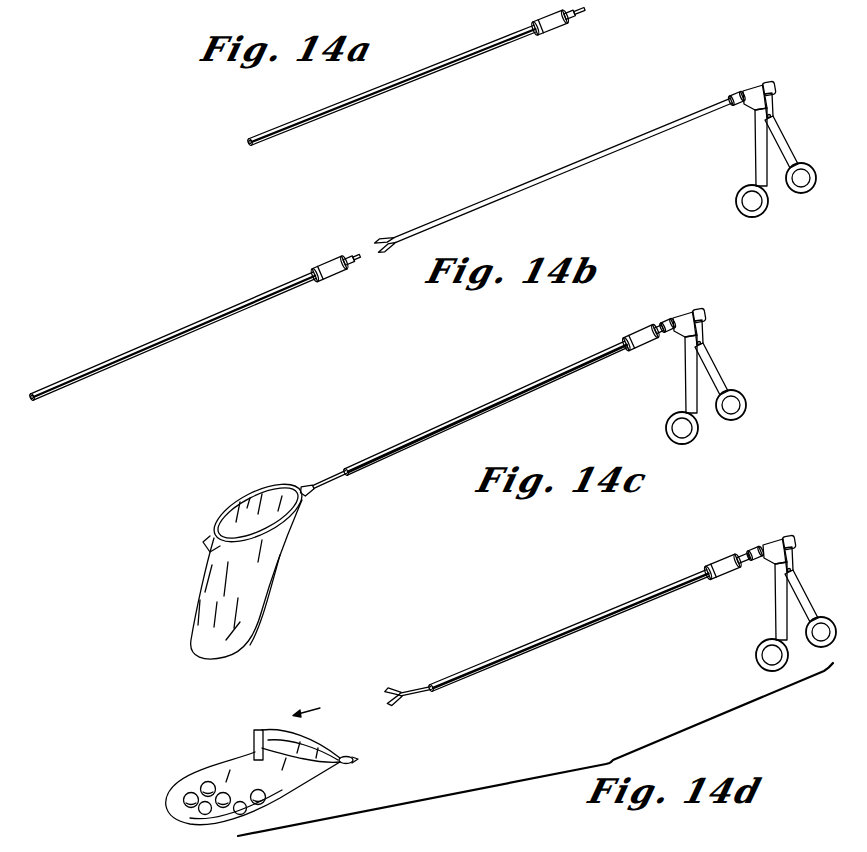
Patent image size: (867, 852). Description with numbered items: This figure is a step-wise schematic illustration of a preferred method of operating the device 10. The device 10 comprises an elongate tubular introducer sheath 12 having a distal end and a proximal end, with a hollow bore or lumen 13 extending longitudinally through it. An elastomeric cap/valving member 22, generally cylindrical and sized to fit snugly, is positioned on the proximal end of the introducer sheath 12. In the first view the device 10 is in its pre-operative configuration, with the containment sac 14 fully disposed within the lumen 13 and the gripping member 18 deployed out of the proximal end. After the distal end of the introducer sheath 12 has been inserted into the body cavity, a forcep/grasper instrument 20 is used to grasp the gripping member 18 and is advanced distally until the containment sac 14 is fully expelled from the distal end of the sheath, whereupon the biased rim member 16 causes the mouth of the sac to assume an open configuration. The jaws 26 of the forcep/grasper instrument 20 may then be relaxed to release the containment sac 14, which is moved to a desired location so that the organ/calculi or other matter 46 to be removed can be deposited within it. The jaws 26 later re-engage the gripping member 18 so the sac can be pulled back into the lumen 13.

In FIG. 14A, the device 10 is at (437, 101).
In FIG. 14B, the device 10 is at (195, 356).
In FIG. 14C, the device 10 is at (504, 412).
In FIG. 14D, the device 10 is at (589, 607).
In FIG. 14A, the elongate tubular introducer sheath 12 is at (349, 106).
In FIG. 14B, the elongate tubular introducer sheath 12 is at (162, 346).
In FIG. 14C, the elongate tubular introducer sheath 12 is at (408, 448).
In FIG. 14D, the elongate tubular introducer sheath 12 is at (534, 650).
In FIG. 14A, the hollow bore or lumen 13 is at (248, 147).
In FIG. 14B, the hollow bore or lumen 13 is at (36, 402).
In FIG. 14C, the containment sac 14 is at (278, 570).
In FIG. 14D, the containment sac 14 is at (205, 774).
In FIG. 14C, the biased rim member 16 is at (259, 487).
In FIG. 14A, the gripping member 18 is at (590, 10).
In FIG. 14B, the gripping member 18 is at (363, 250).
In FIG. 14D, the gripping member 18 is at (357, 760).
In FIG. 14B, the forcep/grasper instrument 20 is at (589, 167).
In FIG. 14C, the forcep/grasper instrument 20 is at (689, 313).
In FIG. 14D, the forcep/grasper instrument 20 is at (766, 545).
In FIG. 14A, the elastomeric cap/valving member 22 is at (560, 28).
In FIG. 14B, the elastomeric cap/valving member 22 is at (337, 275).
In FIG. 14C, the elastomeric cap/valving member 22 is at (648, 343).
In FIG. 14D, the elastomeric cap/valving member 22 is at (718, 559).
In FIG. 14D, the jaws 26 is at (402, 695).
In FIG. 14D, the organ/calculi or other matter 46 is at (207, 813).